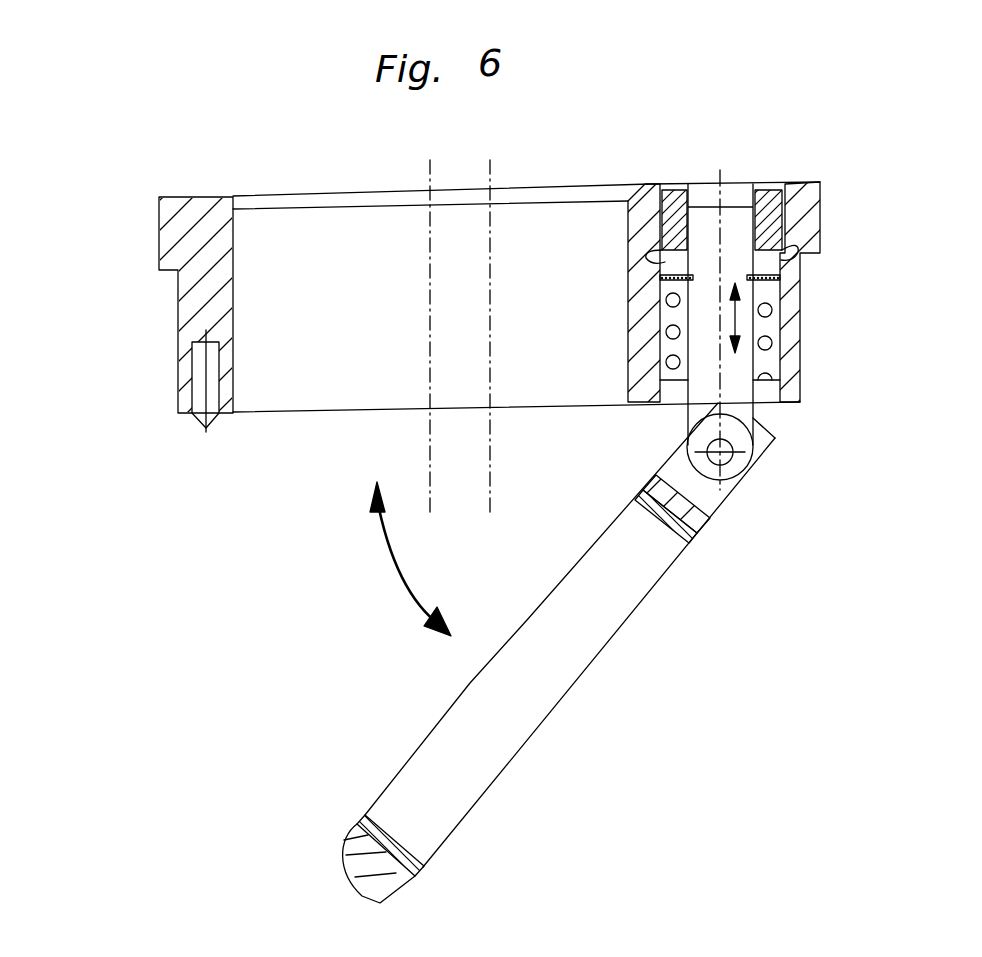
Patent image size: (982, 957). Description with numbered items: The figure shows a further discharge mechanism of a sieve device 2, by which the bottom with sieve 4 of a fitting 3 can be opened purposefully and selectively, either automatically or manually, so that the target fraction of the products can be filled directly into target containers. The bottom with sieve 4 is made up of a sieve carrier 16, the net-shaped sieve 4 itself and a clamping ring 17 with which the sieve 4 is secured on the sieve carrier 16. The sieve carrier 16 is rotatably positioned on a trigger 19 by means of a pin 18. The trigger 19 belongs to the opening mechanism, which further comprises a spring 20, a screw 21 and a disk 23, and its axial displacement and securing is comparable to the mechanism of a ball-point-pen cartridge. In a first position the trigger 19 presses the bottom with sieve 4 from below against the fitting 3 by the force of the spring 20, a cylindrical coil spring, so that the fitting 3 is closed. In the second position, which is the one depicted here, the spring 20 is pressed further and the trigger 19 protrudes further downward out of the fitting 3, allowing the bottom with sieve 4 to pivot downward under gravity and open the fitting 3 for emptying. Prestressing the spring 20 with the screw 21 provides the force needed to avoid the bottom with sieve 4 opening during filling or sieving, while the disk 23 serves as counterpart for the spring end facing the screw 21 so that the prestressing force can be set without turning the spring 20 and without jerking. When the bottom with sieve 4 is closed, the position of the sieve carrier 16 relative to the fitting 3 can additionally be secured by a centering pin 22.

The sieve device 2 is at (590, 132).
The fitting 3 is at (185, 235).
The sieve 4 is at (445, 707).
The sieve carrier 16 is at (363, 863).
The clamping ring 17 is at (690, 543).
The pin 18 is at (738, 458).
The trigger 19 is at (748, 185).
The spring 20 is at (798, 373).
The screw 21 is at (800, 257).
The centering pin 22 is at (200, 405).
The disk 23 is at (792, 287).